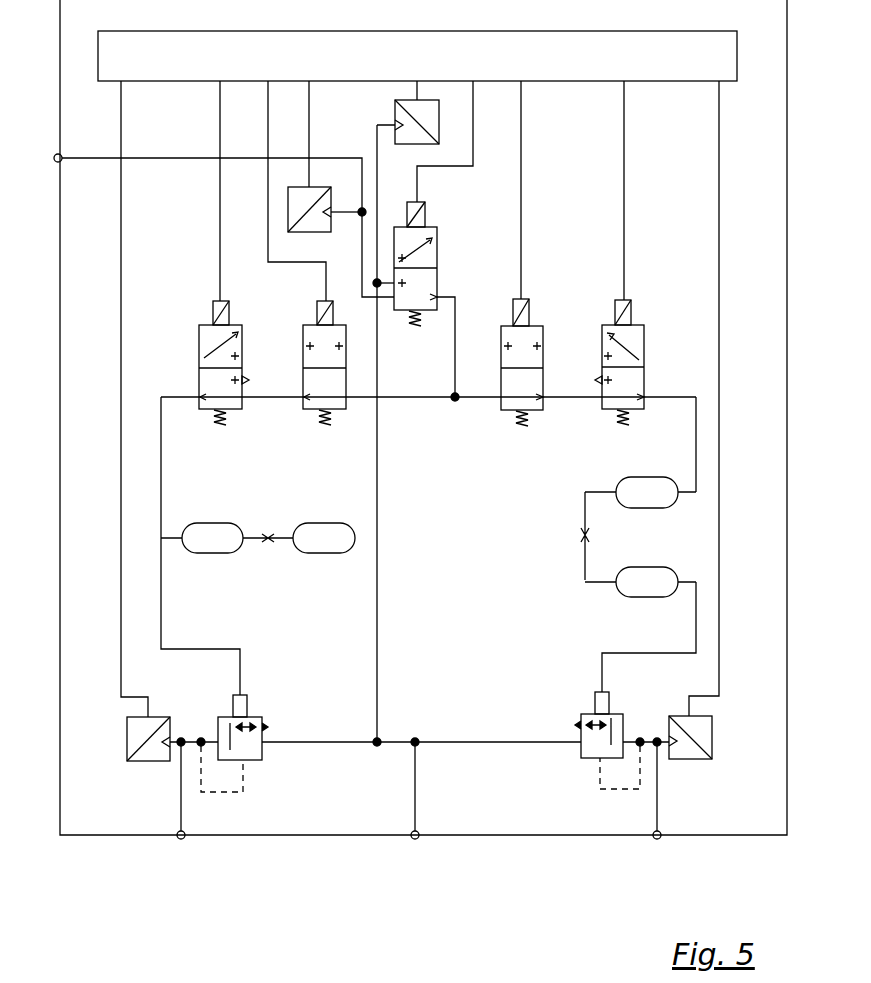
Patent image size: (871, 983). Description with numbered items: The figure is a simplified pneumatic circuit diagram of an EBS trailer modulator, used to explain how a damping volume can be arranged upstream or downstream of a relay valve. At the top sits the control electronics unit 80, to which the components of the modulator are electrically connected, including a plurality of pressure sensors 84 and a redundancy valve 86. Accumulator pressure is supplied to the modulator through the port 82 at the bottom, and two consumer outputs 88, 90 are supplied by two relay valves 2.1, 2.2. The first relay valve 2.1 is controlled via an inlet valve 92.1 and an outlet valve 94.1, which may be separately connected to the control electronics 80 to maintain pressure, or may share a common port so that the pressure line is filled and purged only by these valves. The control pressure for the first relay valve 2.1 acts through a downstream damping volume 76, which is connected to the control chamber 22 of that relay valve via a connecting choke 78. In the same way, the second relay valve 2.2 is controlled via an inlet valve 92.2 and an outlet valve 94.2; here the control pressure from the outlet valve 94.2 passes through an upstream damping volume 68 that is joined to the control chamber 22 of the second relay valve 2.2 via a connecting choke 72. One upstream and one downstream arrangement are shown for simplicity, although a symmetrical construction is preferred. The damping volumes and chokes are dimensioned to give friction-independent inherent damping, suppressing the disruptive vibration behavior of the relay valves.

The control electronics unit 80 is at (417, 56).
The pressure sensor 84 is at (318, 187).
The redundancy valve 86 is at (452, 215).
The outlet valve 94.1 is at (196, 316).
The inlet valve 92.1 is at (304, 316).
The inlet valve 92.2 is at (542, 292).
The outlet valve 94.2 is at (646, 294).
The control chamber 22 is at (439, 560).
The damping volume 76 is at (324, 538).
The connecting choke 78 is at (268, 530).
The damping volume 68 is at (640, 492).
The connecting choke 72 is at (580, 534).
The first relay valve 2.1 is at (268, 701).
The second relay valve 2.2 is at (563, 703).
The consumer output 88 is at (183, 811).
The port 82 is at (421, 813).
The consumer output 90 is at (660, 812).